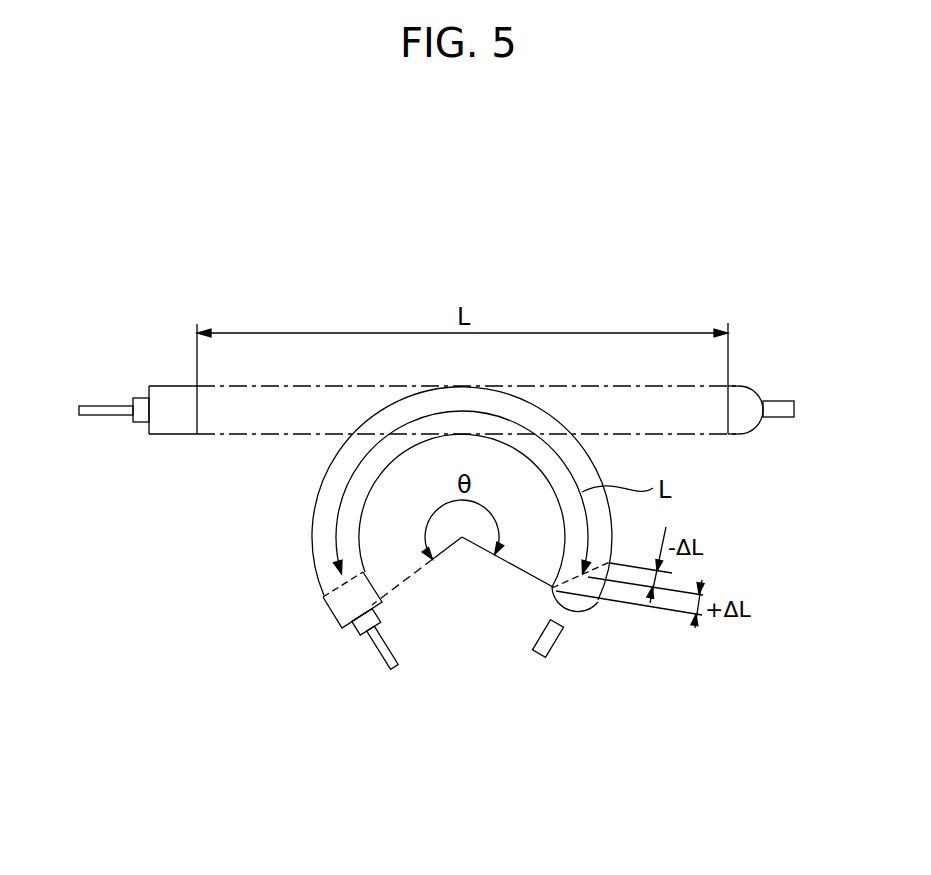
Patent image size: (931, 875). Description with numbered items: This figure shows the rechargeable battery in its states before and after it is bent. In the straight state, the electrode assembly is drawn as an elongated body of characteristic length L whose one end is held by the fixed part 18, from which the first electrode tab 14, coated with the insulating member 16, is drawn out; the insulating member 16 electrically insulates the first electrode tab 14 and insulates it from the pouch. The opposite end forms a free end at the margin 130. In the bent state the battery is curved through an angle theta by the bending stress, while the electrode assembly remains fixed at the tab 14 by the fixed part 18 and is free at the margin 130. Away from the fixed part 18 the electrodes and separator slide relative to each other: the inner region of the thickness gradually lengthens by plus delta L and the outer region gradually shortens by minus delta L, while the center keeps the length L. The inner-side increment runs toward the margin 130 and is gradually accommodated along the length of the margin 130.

The first electrode tab 14 is at (104, 408).
The insulating member 16 is at (140, 413).
The fixed part 18 is at (170, 415).
The margin 130 is at (743, 398).